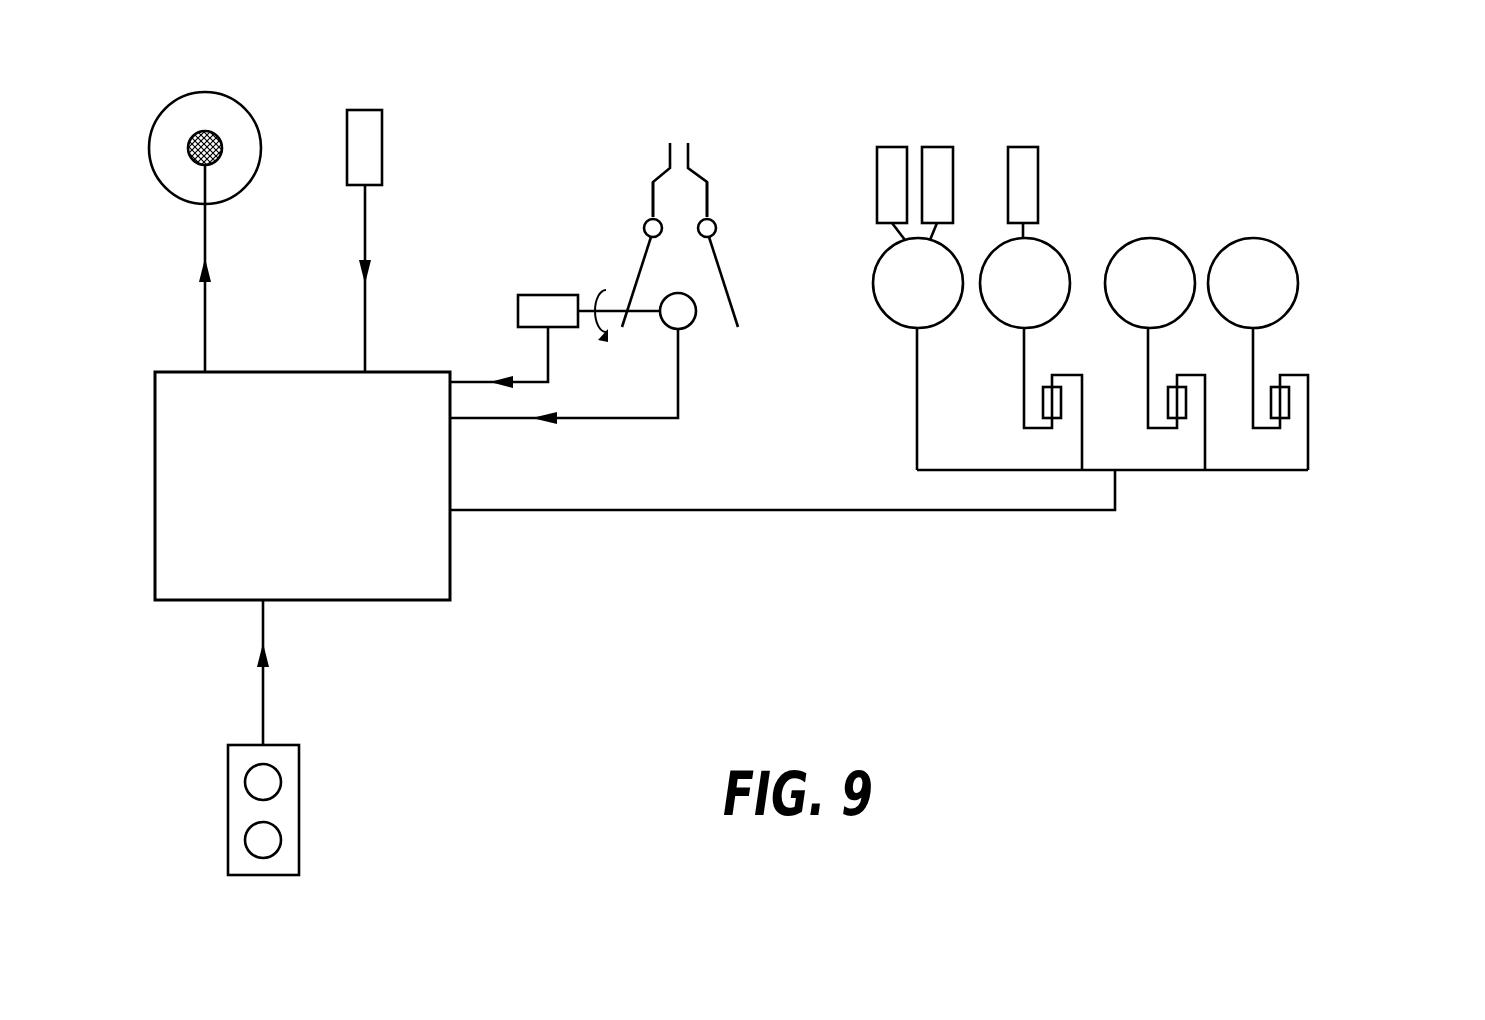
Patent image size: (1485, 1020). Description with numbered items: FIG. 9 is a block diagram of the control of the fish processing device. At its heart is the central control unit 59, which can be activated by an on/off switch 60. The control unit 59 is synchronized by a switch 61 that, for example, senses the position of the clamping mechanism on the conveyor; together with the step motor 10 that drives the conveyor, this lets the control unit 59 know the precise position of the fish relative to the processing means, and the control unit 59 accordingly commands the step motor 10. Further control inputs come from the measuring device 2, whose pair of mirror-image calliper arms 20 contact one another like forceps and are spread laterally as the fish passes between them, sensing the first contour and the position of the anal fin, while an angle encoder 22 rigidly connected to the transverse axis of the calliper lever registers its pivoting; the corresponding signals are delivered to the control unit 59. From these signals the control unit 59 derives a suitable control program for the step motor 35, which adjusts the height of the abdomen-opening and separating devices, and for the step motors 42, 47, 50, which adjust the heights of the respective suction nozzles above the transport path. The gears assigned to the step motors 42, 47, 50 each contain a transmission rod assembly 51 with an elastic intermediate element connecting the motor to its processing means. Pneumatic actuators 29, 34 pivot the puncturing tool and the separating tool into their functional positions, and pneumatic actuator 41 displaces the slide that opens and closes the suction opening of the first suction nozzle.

The measuring device 2 is at (748, 176).
The step motor 10 is at (220, 110).
The calliper arms 20 is at (653, 203).
The angle encoder 22 is at (550, 310).
The pneumatic actuator 29 is at (938, 158).
The pneumatic actuator 34 is at (893, 158).
The step motor 35 is at (898, 327).
The pneumatic actuator 41 is at (1022, 157).
The step motor 42 is at (1015, 327).
The step motor 47 is at (1150, 245).
The step motor 50 is at (1255, 243).
The transmission rod assembly 51 is at (1350, 397).
The central control unit 59 is at (315, 492).
The on/off switch 60 is at (278, 812).
The switch 61 is at (372, 142).